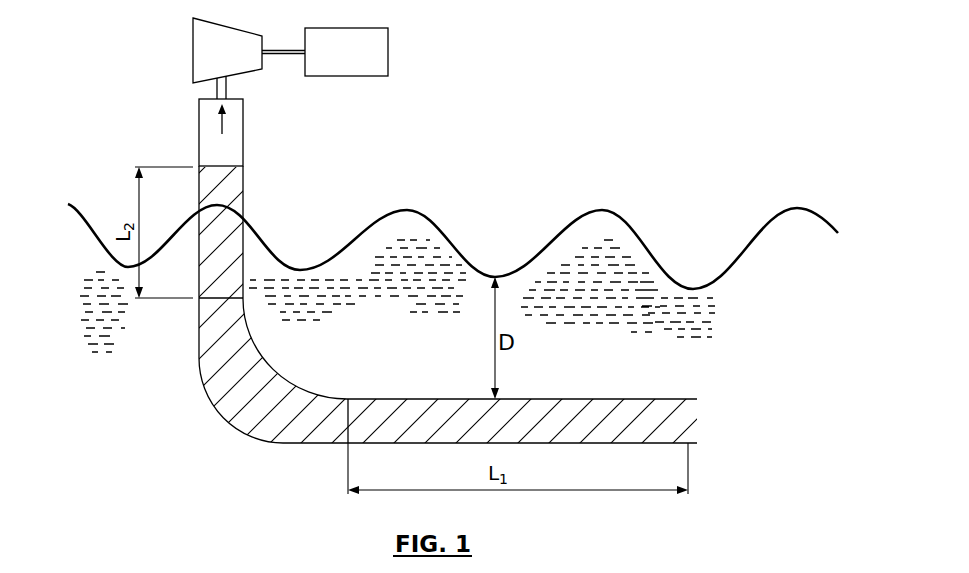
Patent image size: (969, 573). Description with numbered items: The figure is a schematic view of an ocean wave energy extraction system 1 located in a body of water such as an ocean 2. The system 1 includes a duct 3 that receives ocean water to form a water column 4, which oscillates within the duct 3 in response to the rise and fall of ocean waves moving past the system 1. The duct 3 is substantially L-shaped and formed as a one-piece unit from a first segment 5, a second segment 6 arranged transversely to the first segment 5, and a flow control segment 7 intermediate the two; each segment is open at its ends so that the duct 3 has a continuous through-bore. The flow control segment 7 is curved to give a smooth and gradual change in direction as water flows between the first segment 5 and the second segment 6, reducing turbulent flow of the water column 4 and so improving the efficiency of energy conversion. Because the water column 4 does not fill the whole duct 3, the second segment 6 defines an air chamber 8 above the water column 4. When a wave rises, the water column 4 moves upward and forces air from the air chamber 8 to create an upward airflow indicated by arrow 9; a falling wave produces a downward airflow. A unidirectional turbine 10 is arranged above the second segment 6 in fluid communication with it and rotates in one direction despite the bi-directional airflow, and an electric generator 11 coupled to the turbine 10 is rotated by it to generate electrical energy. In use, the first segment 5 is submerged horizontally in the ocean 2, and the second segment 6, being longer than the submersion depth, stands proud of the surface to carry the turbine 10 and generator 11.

The ocean wave energy extraction system 1 is at (598, 95).
The ocean 2 is at (376, 243).
The duct 3 is at (376, 394).
The water column 4 is at (220, 182).
The first segment 5 is at (573, 410).
The second segment 6 is at (208, 193).
The flow control segment 7 is at (228, 400).
The air chamber 8 is at (203, 137).
The arrow 9 is at (223, 122).
The unidirectional turbine 10 is at (208, 43).
The electric generator 11 is at (389, 52).